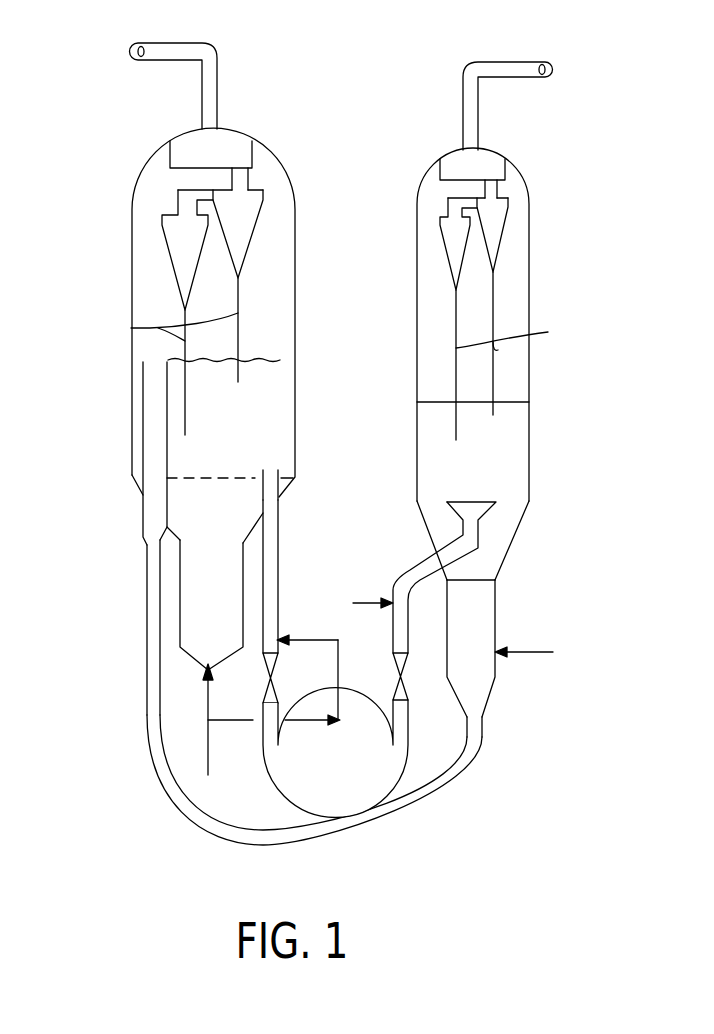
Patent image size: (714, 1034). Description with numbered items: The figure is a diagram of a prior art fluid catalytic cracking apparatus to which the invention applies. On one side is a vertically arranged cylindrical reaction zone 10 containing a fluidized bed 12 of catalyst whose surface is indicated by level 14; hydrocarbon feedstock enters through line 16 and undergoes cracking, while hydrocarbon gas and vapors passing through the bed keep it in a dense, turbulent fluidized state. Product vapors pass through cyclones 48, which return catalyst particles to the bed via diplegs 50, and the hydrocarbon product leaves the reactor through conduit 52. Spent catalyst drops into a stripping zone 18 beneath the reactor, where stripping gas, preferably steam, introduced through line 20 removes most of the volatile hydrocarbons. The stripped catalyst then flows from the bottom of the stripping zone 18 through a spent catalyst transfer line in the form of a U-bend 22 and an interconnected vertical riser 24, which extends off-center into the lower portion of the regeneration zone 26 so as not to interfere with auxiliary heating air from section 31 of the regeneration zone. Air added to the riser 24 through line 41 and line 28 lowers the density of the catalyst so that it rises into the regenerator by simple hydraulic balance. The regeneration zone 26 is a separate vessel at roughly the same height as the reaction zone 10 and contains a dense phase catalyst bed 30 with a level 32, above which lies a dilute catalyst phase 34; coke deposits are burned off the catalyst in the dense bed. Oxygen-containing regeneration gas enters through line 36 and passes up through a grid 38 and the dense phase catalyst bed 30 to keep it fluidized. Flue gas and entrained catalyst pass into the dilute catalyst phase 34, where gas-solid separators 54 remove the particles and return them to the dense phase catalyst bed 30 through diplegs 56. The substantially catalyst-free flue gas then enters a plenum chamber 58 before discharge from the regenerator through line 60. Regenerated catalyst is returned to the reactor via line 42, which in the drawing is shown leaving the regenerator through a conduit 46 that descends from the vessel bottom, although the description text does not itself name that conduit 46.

The reaction zone 10 is at (529, 284).
The fluidized bed 12 is at (505, 450).
The level 14 is at (513, 402).
The line 16 is at (376, 603).
The stripping zone 18 is at (478, 618).
The line 20 is at (530, 652).
The U-bend 22 is at (433, 803).
The vertical riser 24 is at (278, 530).
The regeneration zone 26 is at (132, 240).
The line 28 is at (330, 640).
The dense phase catalyst bed 30 is at (258, 415).
The section 31 is at (197, 566).
The level 32 is at (280, 360).
The dilute catalyst phase 34 is at (270, 268).
The line 36 is at (208, 742).
The grid 38 is at (243, 478).
The line 41 is at (307, 722).
The line 42 is at (147, 626).
The regenerated catalyst standpipe 46 is at (415, 560).
The cyclones 48 is at (498, 228).
The diplegs 50 is at (519, 356).
The conduit 52 is at (545, 63).
The gas-solid separators 54 is at (263, 210).
The diplegs 56 is at (131, 328).
The plenum chamber 58 is at (225, 137).
The line 60 is at (163, 43).